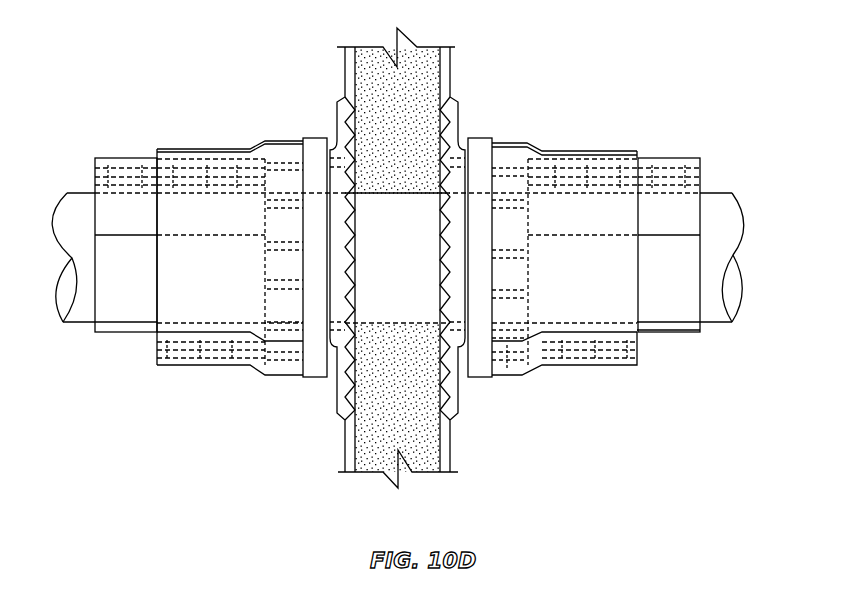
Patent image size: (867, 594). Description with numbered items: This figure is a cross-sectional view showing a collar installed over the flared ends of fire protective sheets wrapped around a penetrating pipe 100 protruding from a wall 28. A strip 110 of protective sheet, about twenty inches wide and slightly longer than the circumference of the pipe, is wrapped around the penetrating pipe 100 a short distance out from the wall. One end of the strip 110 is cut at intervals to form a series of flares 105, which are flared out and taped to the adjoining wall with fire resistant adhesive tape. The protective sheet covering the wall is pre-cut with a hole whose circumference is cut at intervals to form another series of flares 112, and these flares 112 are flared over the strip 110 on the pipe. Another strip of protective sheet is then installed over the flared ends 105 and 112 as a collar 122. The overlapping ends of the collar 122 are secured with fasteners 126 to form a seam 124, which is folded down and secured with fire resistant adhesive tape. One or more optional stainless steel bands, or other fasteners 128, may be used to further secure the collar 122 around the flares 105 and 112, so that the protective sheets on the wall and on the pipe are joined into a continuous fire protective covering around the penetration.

The wall 28 is at (378, 68).
The penetrating pipe 100 is at (728, 225).
The flares 105 is at (447, 199).
The strip of protective sheet 110 is at (680, 333).
The flares 112 is at (275, 265).
The collar 122 is at (514, 141).
The seam 124 is at (575, 367).
The fasteners 126 is at (598, 362).
The fasteners 128 is at (482, 137).